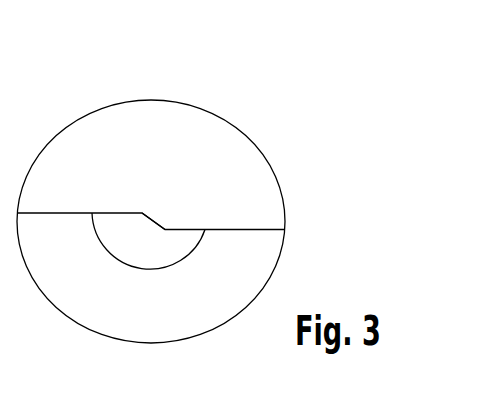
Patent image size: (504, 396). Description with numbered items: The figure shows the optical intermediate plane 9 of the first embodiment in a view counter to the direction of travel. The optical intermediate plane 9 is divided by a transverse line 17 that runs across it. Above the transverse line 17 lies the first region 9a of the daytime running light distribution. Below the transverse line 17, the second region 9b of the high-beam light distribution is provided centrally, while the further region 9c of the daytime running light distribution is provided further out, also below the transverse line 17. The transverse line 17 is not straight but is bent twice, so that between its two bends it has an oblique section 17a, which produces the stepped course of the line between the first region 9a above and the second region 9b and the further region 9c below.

The optical intermediate plane 9 is at (152, 62).
The first region of the daytime running light distribution 9a is at (151, 159).
The second region of the high-beam light distribution 9b is at (148, 241).
The further region of the daytime running light distribution 9c is at (151, 307).
The transverse line 17 is at (230, 230).
The oblique section 17a is at (157, 221).